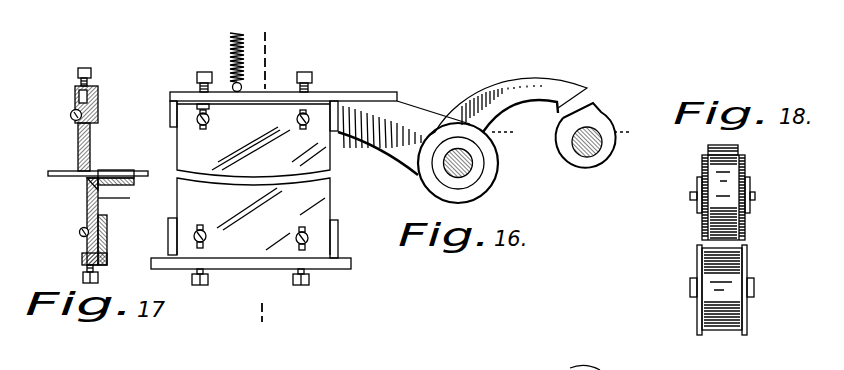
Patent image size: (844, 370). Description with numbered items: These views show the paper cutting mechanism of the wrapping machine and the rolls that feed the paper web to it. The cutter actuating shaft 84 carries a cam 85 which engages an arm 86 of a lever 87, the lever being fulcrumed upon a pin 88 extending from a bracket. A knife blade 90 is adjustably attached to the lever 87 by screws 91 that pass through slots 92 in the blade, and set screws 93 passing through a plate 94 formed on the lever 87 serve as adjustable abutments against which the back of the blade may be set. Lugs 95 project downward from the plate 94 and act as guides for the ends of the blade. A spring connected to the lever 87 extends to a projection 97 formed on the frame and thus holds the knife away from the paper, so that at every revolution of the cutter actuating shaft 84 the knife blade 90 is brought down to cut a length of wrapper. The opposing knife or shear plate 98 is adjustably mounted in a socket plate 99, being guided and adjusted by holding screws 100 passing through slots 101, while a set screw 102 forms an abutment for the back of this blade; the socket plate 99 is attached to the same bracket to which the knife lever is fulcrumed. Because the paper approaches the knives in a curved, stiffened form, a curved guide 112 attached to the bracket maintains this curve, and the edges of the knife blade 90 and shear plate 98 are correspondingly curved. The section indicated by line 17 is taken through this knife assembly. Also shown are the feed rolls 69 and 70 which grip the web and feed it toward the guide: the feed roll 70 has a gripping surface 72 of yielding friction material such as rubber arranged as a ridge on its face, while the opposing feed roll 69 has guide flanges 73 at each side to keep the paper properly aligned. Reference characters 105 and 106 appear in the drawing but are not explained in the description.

In FIG. 16, the section line 17 is at (269, 182).
In FIG. 18, the feed roll 69 is at (747, 257).
In FIG. 18, the feed roll 70 is at (755, 200).
In FIG. 18, the gripping surface 72 is at (720, 198).
In FIG. 18, the guide flanges 73 is at (696, 271).
In FIG. 16, the cutter actuating shaft 84 is at (592, 156).
In FIG. 16, the cam 85 is at (613, 145).
In FIG. 16, the arm 86 is at (519, 84).
In FIG. 16, the lever 87 is at (386, 152).
In FIG. 16, the pin 88 is at (468, 175).
In FIG. 17, the knife blade 90 is at (78, 145).
In FIG. 16, the knife blade 90 is at (188, 150).
In FIG. 17, the screws 91 is at (71, 116).
In FIG. 16, the screws 91 is at (195, 118).
In FIG. 16, the slots 92 is at (205, 127).
In FIG. 17, the set screws 93 is at (87, 67).
In FIG. 16, the set screws 93 is at (205, 71).
In FIG. 16, the plate 94 is at (372, 92).
In FIG. 16, the lugs 95 is at (170, 118).
In FIG. 16, the projection 97 is at (529, 360).
In FIG. 16, the shear plate 98 is at (190, 200).
In FIG. 16, the socket plate 99 is at (332, 268).
In FIG. 16, the holding screws 100 is at (194, 238).
In FIG. 17, the slots 101 is at (79, 233).
In FIG. 16, the slots 101 is at (198, 226).
In FIG. 17, the set screw 102 is at (83, 278).
In FIG. 16, the set screw 102 is at (200, 286).
In FIG. 16, the link 105 is at (563, 369).
In FIG. 16, the pin 106 is at (626, 362).
In FIG. 17, the curved guide 112 is at (90, 195).